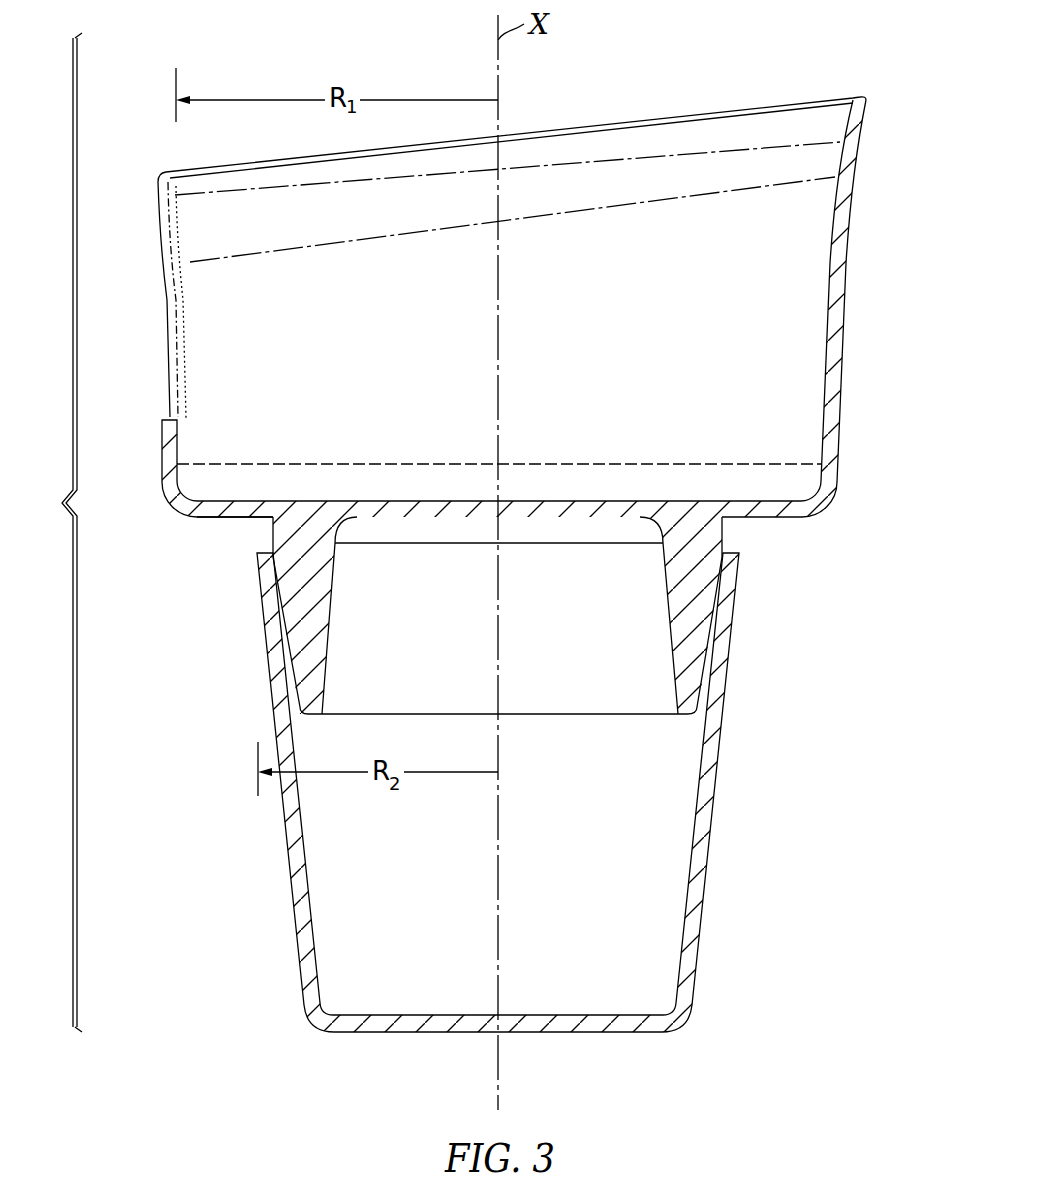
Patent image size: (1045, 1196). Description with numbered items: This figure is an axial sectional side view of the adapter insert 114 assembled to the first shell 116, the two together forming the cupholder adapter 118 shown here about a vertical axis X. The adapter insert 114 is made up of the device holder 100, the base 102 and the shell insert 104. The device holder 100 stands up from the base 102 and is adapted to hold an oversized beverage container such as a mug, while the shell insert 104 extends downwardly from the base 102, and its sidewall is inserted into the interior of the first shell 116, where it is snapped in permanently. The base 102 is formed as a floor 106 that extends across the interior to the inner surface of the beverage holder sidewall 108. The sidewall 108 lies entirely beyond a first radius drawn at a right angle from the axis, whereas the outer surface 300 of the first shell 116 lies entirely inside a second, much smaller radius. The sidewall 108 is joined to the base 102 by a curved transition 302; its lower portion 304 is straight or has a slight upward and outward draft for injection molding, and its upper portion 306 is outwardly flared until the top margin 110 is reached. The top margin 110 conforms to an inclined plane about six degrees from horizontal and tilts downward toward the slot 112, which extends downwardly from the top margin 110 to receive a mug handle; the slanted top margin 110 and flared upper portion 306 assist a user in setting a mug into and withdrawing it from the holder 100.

The device holder 100 is at (860, 344).
The base 102 is at (431, 507).
The shell insert 104 is at (326, 578).
The floor 106 is at (588, 499).
The beverage holder sidewall 108 is at (850, 264).
The top margin 110 is at (860, 96).
The slot 112 is at (158, 328).
The adapter insert 114 is at (870, 467).
The first shell 116 is at (297, 836).
The cupholder adapter 118 is at (49, 532).
The outer surface 300 is at (295, 894).
The curved transition 302 is at (797, 490).
The lower portion 304 is at (836, 298).
The upper portion 306 is at (862, 124).